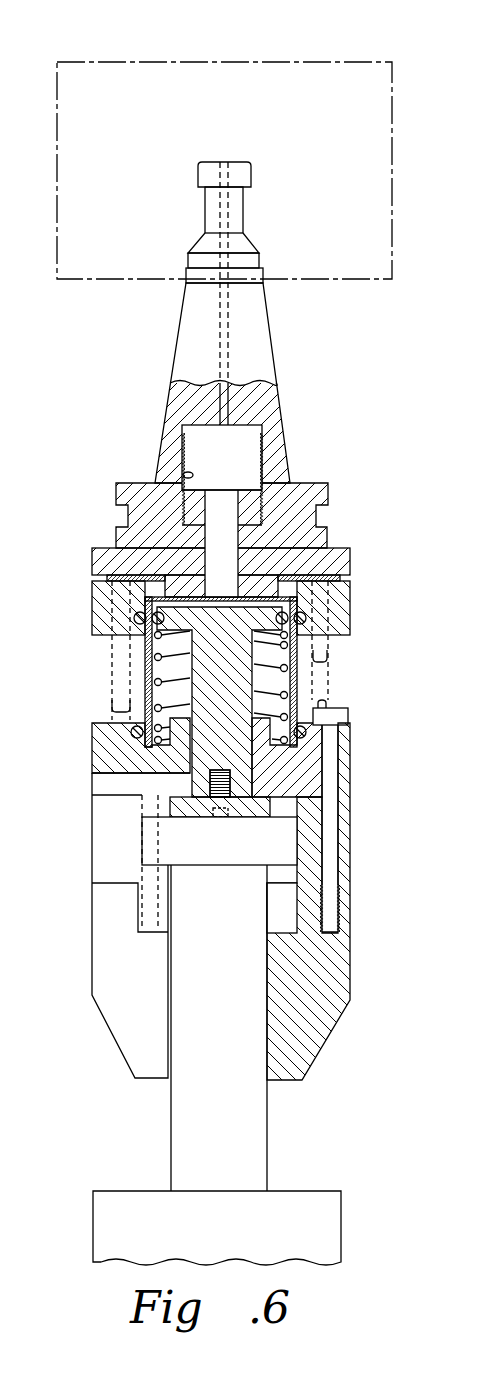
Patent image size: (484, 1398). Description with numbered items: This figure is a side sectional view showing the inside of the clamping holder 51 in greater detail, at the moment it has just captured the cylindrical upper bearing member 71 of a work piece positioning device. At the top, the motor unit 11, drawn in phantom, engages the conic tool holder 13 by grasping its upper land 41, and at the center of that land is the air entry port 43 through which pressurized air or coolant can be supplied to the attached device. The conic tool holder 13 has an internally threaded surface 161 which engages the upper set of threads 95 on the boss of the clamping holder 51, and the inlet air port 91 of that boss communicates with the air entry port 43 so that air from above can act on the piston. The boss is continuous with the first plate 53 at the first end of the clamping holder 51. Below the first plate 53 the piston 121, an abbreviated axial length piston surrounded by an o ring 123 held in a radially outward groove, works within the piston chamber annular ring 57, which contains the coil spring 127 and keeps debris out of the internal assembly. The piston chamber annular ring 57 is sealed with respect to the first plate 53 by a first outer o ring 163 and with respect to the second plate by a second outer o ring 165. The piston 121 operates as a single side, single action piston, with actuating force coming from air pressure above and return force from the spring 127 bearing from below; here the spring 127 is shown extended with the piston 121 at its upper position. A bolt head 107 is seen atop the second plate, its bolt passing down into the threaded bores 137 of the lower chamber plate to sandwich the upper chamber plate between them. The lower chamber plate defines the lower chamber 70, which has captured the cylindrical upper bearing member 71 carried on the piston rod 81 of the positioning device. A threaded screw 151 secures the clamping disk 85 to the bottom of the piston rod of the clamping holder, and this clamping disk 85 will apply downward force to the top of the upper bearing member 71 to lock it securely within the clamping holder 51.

The motor unit 11 is at (279, 62).
The conic tool holder 13 is at (275, 332).
The upper land 41 is at (251, 178).
The air entry port 43 is at (238, 162).
The clamping holder 51 is at (84, 924).
The first plate 53 is at (352, 566).
The piston chamber annular ring 57 is at (300, 655).
The lower chamber 70 is at (285, 930).
The cylindrical upper bearing member 71 is at (201, 853).
The piston rod 81 is at (268, 1132).
The clamping disk 85 is at (272, 803).
The inlet air port 91 is at (228, 493).
The upper set of threads 95 is at (187, 480).
The bolt head 107 is at (349, 714).
The piston 121 is at (186, 548).
The "o" ring 123 is at (312, 558).
The coil spring 127 is at (290, 673).
The threaded bores 137 is at (338, 907).
The threaded screw 151 is at (235, 815).
The internally threaded surface 161 is at (186, 460).
The first outer "o" ring 163 is at (302, 622).
The second outer "o" ring 165 is at (304, 745).